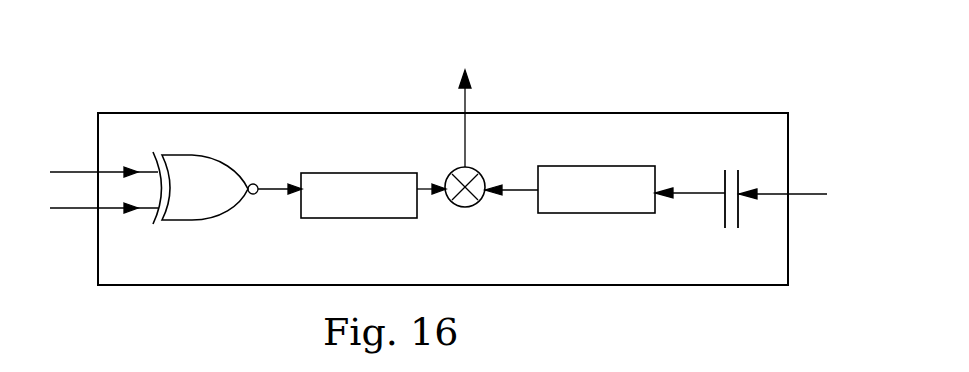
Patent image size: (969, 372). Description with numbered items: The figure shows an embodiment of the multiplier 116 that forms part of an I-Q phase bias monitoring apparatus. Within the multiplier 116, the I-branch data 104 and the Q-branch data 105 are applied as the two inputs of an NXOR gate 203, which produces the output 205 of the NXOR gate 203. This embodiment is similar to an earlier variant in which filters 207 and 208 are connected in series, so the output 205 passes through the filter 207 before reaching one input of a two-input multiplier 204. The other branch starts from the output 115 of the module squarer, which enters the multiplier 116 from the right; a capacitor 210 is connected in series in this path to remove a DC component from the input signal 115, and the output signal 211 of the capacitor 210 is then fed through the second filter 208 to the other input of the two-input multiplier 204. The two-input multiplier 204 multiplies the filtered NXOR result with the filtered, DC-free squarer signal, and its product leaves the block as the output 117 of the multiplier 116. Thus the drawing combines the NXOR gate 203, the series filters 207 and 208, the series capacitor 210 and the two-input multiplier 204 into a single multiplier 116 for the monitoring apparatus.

The I-branch data 104 is at (75, 168).
The Q-branch data 105 is at (75, 216).
The NXOR gate 203 is at (202, 222).
The output of the NXOR gate 205 is at (271, 180).
The filter 207 is at (323, 218).
The two-input multiplier 204 is at (470, 212).
The output of the multiplier 117 is at (477, 93).
The filter 208 is at (598, 215).
The output signal of the capacitor 211 is at (677, 200).
The capacitor 210 is at (740, 212).
The multiplier 116 is at (793, 111).
The output of the module squarer 115 is at (803, 203).